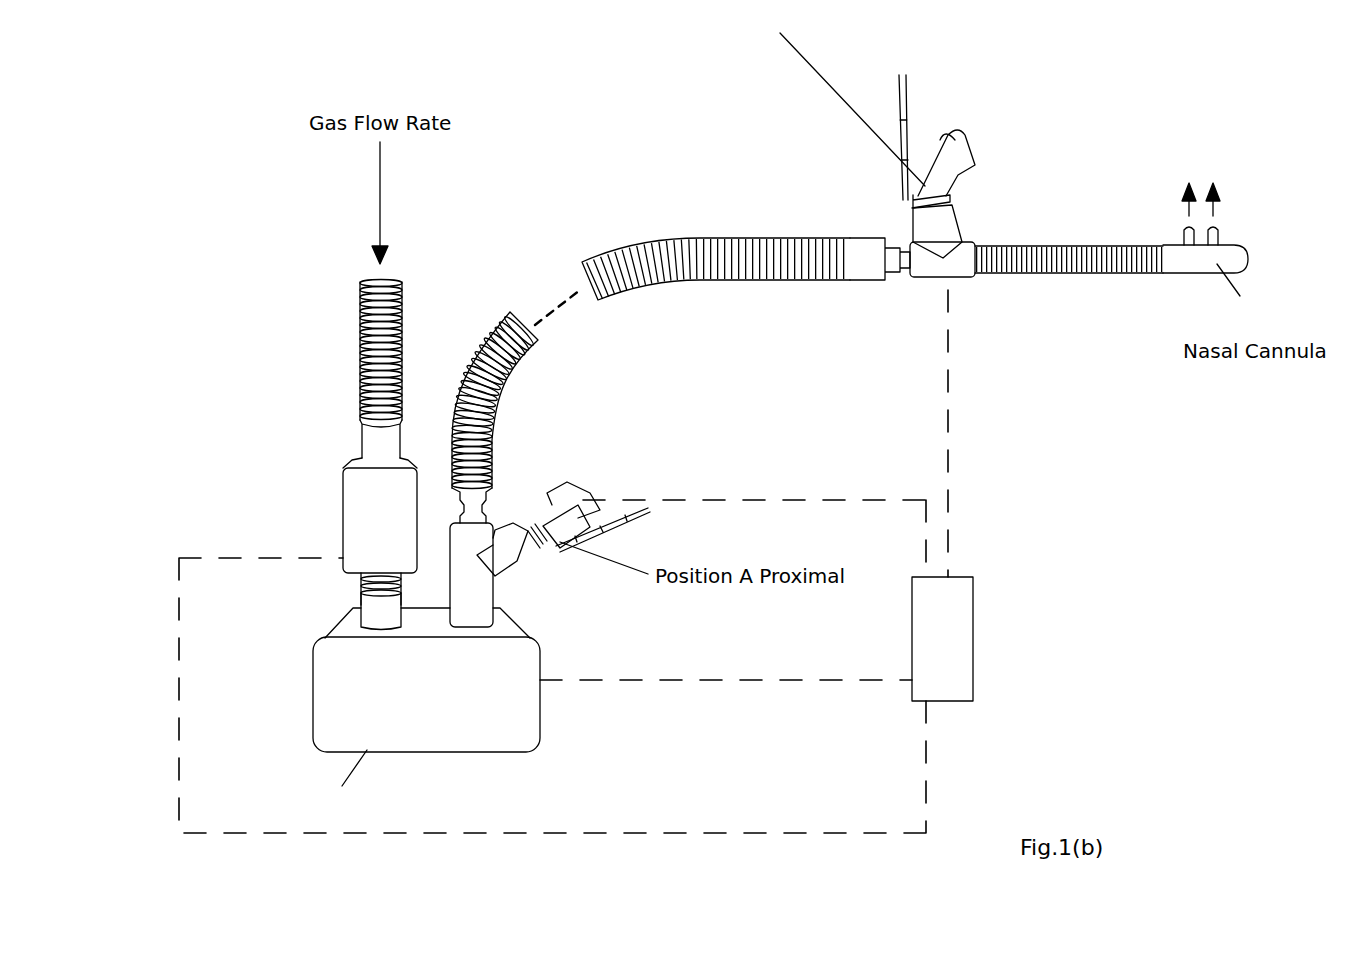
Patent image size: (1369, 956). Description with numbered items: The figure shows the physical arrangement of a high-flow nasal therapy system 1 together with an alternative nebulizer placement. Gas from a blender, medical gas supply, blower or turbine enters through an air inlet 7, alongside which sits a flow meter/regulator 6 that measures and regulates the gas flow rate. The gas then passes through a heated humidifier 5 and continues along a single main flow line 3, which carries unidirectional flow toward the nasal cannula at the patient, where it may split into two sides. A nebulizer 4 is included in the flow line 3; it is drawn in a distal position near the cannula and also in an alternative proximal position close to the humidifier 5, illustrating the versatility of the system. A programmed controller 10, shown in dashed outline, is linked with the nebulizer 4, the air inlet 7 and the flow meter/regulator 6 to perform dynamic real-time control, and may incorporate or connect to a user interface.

The HFNT system 1 is at (186, 169).
The flow line 3 is at (708, 291).
The nebulizer 4 is at (582, 500).
The heated humidifier 5 is at (541, 697).
The flow meter/regulator 6 is at (343, 531).
The air inlet 7 is at (358, 354).
The programmed controller 10 is at (973, 675).